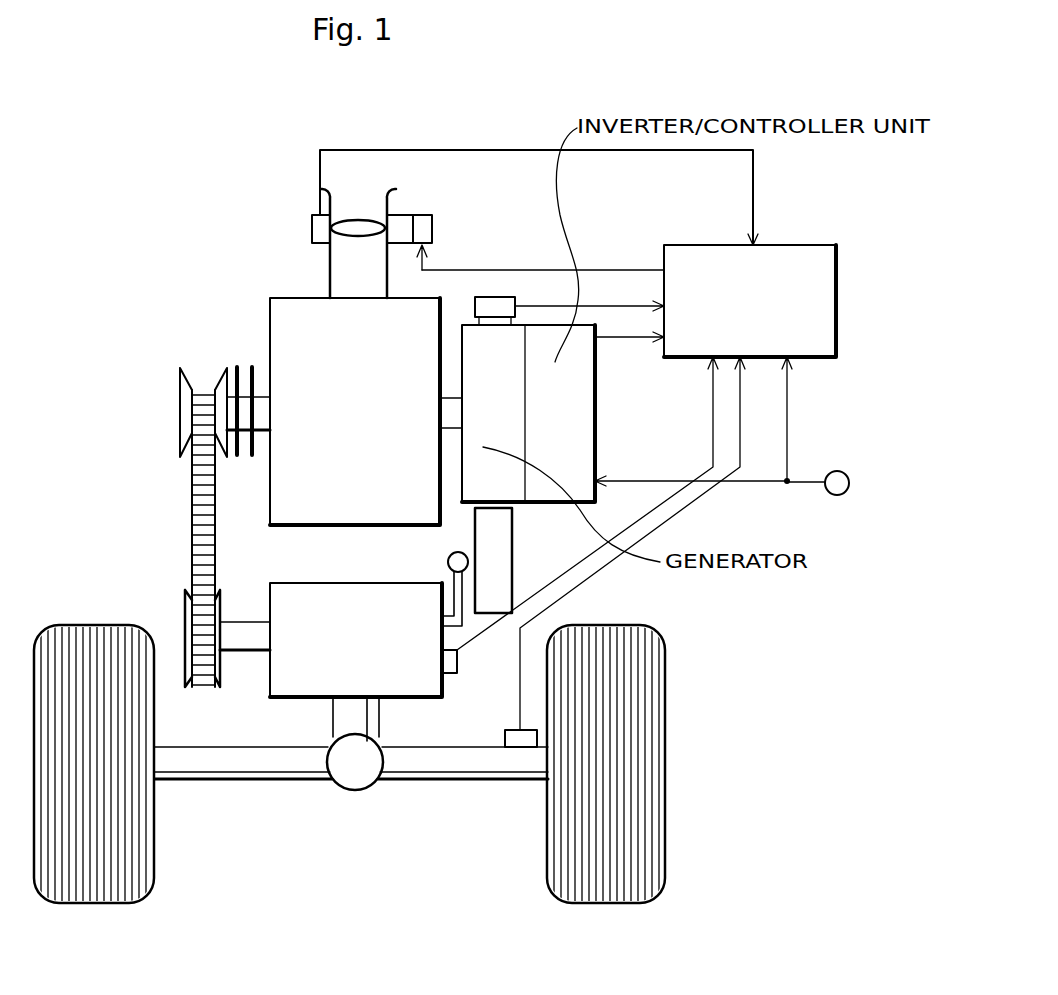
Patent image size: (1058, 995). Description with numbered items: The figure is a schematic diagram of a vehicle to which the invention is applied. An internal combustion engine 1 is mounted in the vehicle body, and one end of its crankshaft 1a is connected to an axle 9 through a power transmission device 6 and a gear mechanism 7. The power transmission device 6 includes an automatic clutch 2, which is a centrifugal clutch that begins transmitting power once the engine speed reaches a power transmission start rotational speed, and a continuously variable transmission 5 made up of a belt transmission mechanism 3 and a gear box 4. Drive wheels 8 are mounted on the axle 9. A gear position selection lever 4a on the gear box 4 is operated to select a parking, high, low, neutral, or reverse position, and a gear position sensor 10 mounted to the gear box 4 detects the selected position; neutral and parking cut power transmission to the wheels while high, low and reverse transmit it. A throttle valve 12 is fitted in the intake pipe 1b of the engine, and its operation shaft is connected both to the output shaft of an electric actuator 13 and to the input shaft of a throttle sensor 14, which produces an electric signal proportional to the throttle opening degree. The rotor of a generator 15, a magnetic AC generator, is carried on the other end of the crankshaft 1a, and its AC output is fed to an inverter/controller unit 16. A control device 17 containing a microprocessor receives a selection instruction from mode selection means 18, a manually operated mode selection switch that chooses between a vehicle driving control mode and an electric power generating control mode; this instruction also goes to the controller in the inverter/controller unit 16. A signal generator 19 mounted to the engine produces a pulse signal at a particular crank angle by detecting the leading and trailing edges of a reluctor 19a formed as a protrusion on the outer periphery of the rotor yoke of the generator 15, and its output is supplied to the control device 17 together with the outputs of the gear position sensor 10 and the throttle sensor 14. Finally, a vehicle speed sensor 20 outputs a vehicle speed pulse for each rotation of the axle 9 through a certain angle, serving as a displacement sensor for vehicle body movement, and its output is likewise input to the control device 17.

The internal combustion engine 1 is at (262, 286).
The crankshaft 1a is at (262, 437).
The intake pipe 1b is at (328, 268).
The automatic clutch 2 is at (245, 355).
The belt transmission mechanism 3 is at (184, 513).
The gear box 4 is at (348, 583).
The gear position selection lever 4a is at (452, 553).
The CVT (continuously variable transmission) 5 is at (246, 688).
The power transmission device 6 is at (172, 470).
The gear mechanism 7 is at (372, 758).
The drive wheels 8 is at (95, 625).
The axle 9 is at (236, 781).
The gear position sensor 10 is at (448, 677).
The throttle valve 12 is at (353, 228).
The electric actuator 13 is at (403, 224).
The throttle sensor 14 is at (316, 226).
The generator 15 is at (505, 490).
The inverter/controller unit 16 is at (596, 417).
The control device 17 is at (723, 234).
The mode selection means 18 is at (829, 492).
The signal generator 19 is at (497, 297).
The reluctor (inductor) 19a is at (538, 242).
The vehicle speed sensor 20 is at (508, 732).